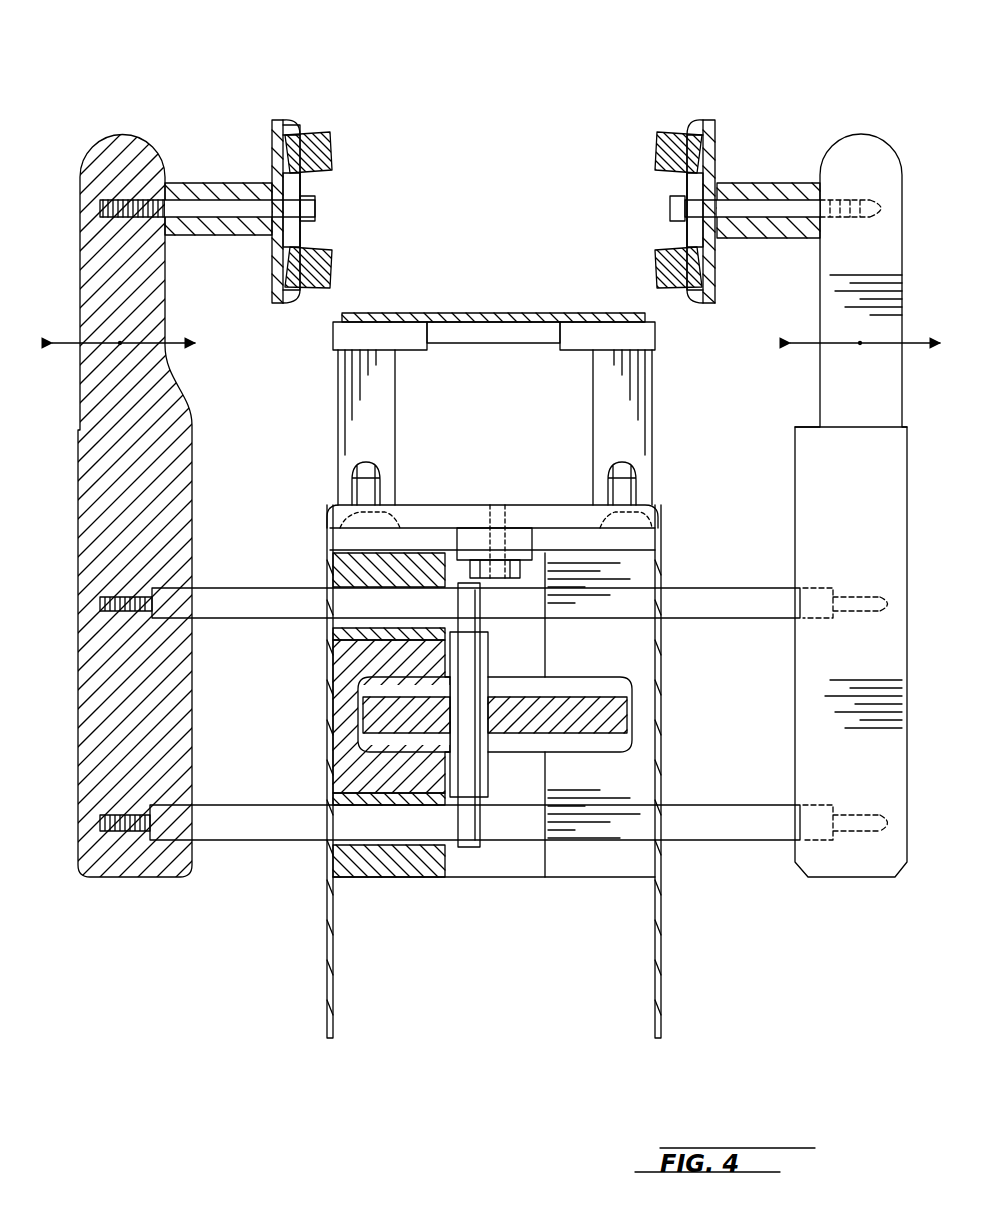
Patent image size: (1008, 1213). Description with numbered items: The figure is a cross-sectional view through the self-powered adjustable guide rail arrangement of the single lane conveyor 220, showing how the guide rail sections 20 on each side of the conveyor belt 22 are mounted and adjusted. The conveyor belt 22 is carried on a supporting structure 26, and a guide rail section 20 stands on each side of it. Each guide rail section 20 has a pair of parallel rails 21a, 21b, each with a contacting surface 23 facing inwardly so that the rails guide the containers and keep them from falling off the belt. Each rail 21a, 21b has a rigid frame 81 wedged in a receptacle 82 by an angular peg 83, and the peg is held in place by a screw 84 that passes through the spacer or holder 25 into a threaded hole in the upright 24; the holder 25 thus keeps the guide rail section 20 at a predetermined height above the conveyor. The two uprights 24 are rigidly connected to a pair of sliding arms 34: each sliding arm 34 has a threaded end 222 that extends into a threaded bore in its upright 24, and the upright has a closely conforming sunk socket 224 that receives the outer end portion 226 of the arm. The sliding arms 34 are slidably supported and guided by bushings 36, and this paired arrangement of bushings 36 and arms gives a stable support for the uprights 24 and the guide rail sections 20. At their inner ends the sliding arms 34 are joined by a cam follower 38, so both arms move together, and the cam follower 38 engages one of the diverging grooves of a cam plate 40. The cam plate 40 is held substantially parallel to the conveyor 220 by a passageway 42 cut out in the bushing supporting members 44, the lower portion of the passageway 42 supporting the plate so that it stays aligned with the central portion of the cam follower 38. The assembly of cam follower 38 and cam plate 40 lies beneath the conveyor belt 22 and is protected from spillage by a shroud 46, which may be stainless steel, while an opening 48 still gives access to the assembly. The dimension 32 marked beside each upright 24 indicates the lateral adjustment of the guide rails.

The guide rail section 20 is at (270, 85).
The rail 21a is at (332, 150).
The rail 21b is at (279, 303).
The conveyor belt 22 is at (455, 313).
The contacting surface 23 is at (335, 153).
The upright 24 is at (175, 485).
The holder (spacer) 25 is at (240, 235).
The supporting structure 26 is at (478, 505).
The spacing dimension 32 is at (172, 340).
The sliding arm 34 is at (255, 598).
The bushing 36 is at (330, 630).
The cam follower 38 is at (475, 655).
The cam plate 40 is at (525, 725).
The passageway 42 is at (355, 728).
The bushing supporting member 44 is at (340, 690).
The shroud 46 is at (665, 940).
The opening 48 is at (500, 990).
The rigid frame 81 is at (305, 128).
The receptacle 82 is at (272, 128).
The angular peg 83 is at (300, 190).
The screw 84 is at (315, 210).
The conveyor 220 is at (500, 262).
The threaded end 222 is at (118, 825).
The sunk socket 224 is at (815, 832).
The outer end portion 226 is at (175, 832).